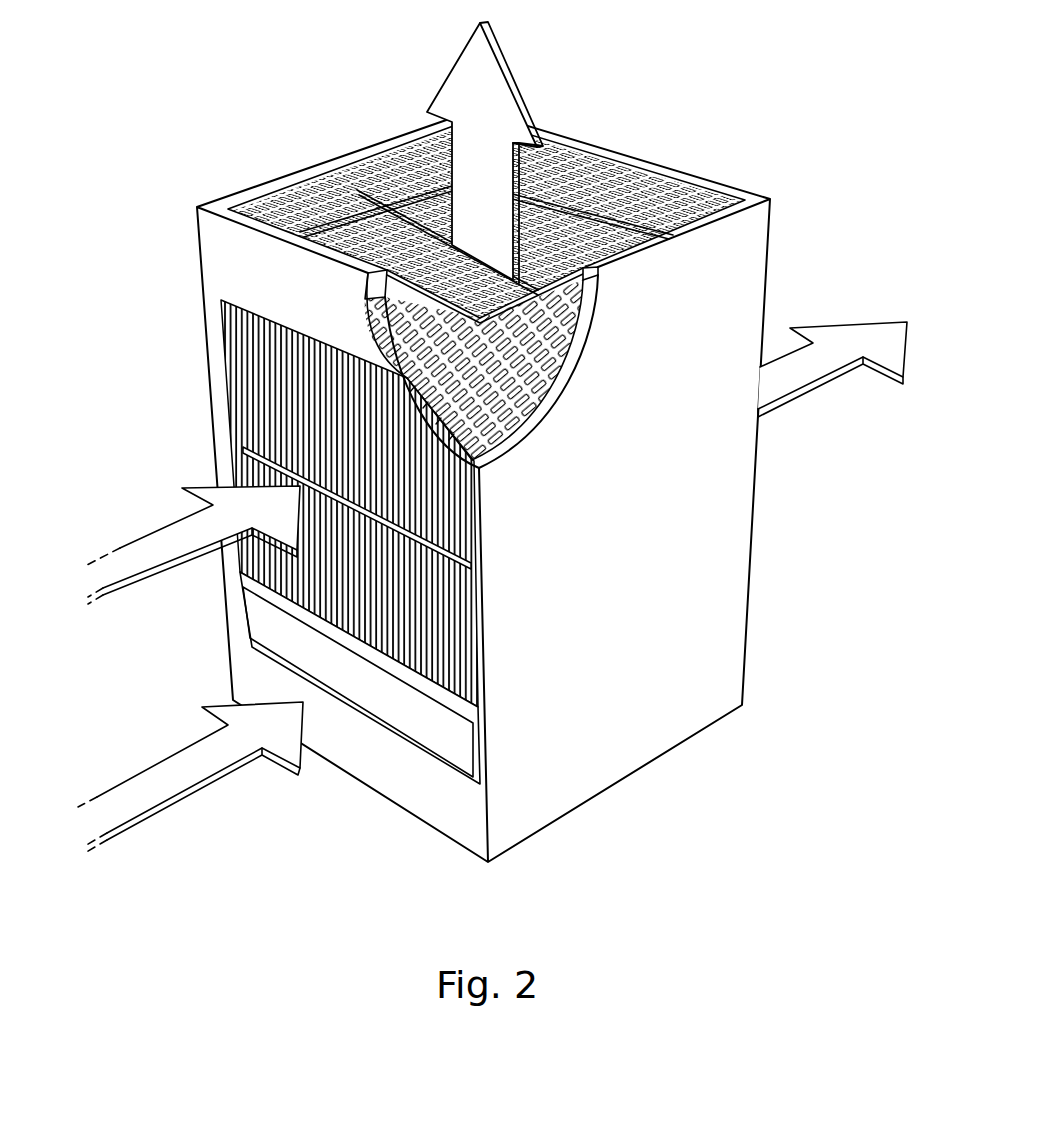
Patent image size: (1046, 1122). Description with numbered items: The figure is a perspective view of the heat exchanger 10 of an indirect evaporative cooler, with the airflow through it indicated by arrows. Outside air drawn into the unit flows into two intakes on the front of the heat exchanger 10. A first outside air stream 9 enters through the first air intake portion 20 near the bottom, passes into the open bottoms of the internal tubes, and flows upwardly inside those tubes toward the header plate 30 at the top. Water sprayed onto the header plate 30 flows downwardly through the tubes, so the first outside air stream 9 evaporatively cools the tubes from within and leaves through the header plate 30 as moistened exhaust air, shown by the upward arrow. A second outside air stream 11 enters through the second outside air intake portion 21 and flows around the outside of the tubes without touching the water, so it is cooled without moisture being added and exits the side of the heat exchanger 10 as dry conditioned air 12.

The first outside air stream 9 is at (182, 762).
The heat exchanger 10 is at (778, 521).
The second outside air stream 11 is at (171, 541).
The dry conditioned air 12 is at (843, 343).
The first air intake portion 20 is at (443, 727).
The second outside air intake portion 21 is at (262, 372).
The header plate 30 is at (592, 226).